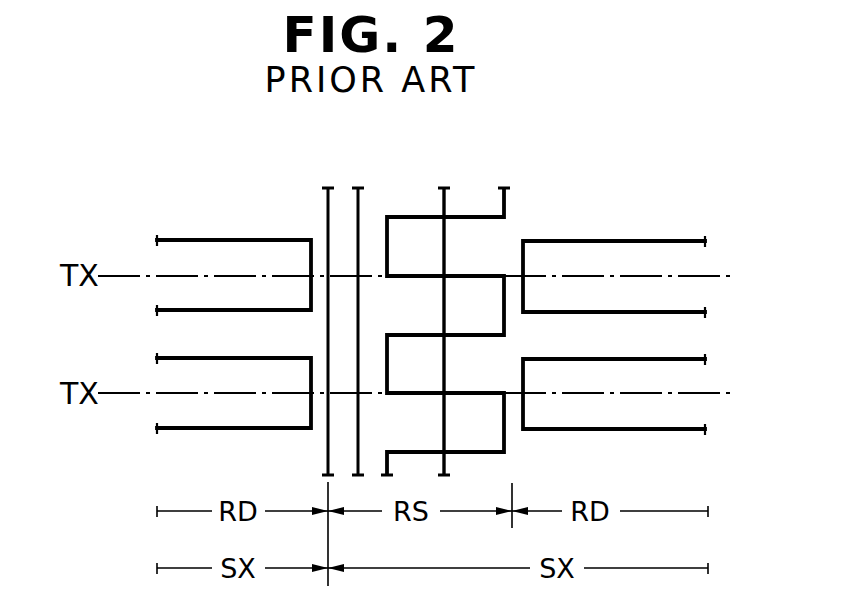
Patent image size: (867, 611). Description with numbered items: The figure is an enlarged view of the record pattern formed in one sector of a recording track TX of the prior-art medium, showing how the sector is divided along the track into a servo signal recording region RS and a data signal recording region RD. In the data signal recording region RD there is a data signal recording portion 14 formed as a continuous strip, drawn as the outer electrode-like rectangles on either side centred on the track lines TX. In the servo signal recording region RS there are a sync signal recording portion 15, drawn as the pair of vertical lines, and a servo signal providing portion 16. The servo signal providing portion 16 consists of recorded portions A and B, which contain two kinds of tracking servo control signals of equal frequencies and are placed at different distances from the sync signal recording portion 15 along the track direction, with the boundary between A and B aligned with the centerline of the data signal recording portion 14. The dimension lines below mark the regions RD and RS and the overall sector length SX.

The data signal recording portion 14 is at (216, 256).
The sync signal recording portion 15 is at (341, 195).
The servo signal providing portion 16 is at (428, 246).